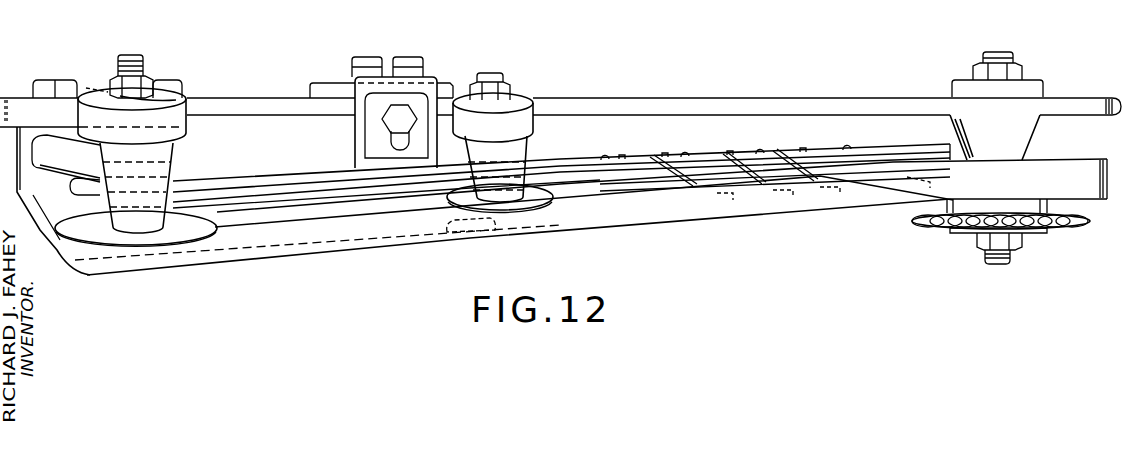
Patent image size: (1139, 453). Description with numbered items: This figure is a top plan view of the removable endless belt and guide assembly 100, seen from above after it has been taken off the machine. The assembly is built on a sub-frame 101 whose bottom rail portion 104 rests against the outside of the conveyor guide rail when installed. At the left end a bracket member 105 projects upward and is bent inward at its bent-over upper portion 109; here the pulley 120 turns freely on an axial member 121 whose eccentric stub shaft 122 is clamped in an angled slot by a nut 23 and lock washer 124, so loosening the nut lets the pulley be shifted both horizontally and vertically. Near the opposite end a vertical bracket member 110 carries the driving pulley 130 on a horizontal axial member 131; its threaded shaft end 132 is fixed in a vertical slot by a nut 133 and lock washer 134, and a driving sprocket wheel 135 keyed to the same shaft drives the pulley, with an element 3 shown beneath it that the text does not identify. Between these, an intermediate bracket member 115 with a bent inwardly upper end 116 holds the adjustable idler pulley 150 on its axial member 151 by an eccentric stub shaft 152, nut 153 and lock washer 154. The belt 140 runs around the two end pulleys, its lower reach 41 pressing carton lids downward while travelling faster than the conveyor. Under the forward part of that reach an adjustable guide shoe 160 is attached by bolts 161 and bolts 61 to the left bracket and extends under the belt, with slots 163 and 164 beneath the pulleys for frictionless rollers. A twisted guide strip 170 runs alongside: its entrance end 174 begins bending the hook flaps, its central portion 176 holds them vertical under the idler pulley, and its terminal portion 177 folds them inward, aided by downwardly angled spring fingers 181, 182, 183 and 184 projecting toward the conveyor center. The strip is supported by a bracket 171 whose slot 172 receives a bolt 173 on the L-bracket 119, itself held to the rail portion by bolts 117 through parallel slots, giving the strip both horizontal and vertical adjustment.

The bolt 3 is at (997, 265).
The nut 23 is at (150, 97).
The support rail 41 is at (580, 193).
The clamp 61 is at (38, 80).
The endless belt and guide assembly 100 is at (1080, 117).
The sub-frame 101 is at (868, 97).
The bottom rail portion 104 is at (588, 105).
The bracket member 105 is at (167, 100).
The bent-over upper portion 109 is at (82, 92).
The vertical bracket member 110 is at (1043, 90).
The bracket member 115 is at (510, 95).
The bent inwardly upper end 116 is at (507, 113).
The bolts 117 is at (405, 57).
The L-bracket 119 is at (429, 78).
The pulley 120 is at (136, 228).
The axial member 121 is at (150, 172).
The eccentric stub shaft 122 is at (125, 55).
The lock washer 124 is at (107, 100).
The driving pulley 130 is at (1092, 202).
The horizontal axial member 131 is at (973, 135).
The shaft end 132 is at (993, 52).
The nut 133 is at (1017, 72).
The lock washer 134 is at (965, 78).
The driving sprocket wheel 135 is at (1055, 222).
The belt 140 is at (860, 200).
The adjustable idler pulley 150 is at (540, 210).
The axial member 151 is at (496, 169).
The stub shaft 152 is at (487, 75).
The nut 153 is at (503, 78).
The lock washer 154 is at (467, 100).
The adjustable guide shoe 160 is at (34, 228).
The bolts 161 is at (180, 83).
The slot 163 is at (115, 207).
The slot 164 is at (473, 235).
The twisted guide strip 170 is at (248, 180).
The bracket 171 is at (380, 165).
The slot 172 is at (394, 158).
The bolt 173 is at (390, 119).
The entrance end 174 is at (60, 147).
The central portion 176 is at (540, 167).
The terminal portion 177 is at (877, 137).
The spring finger 181 is at (720, 205).
The spring finger 182 is at (780, 197).
The spring finger 183 is at (833, 193).
The spring finger 184 is at (905, 180).